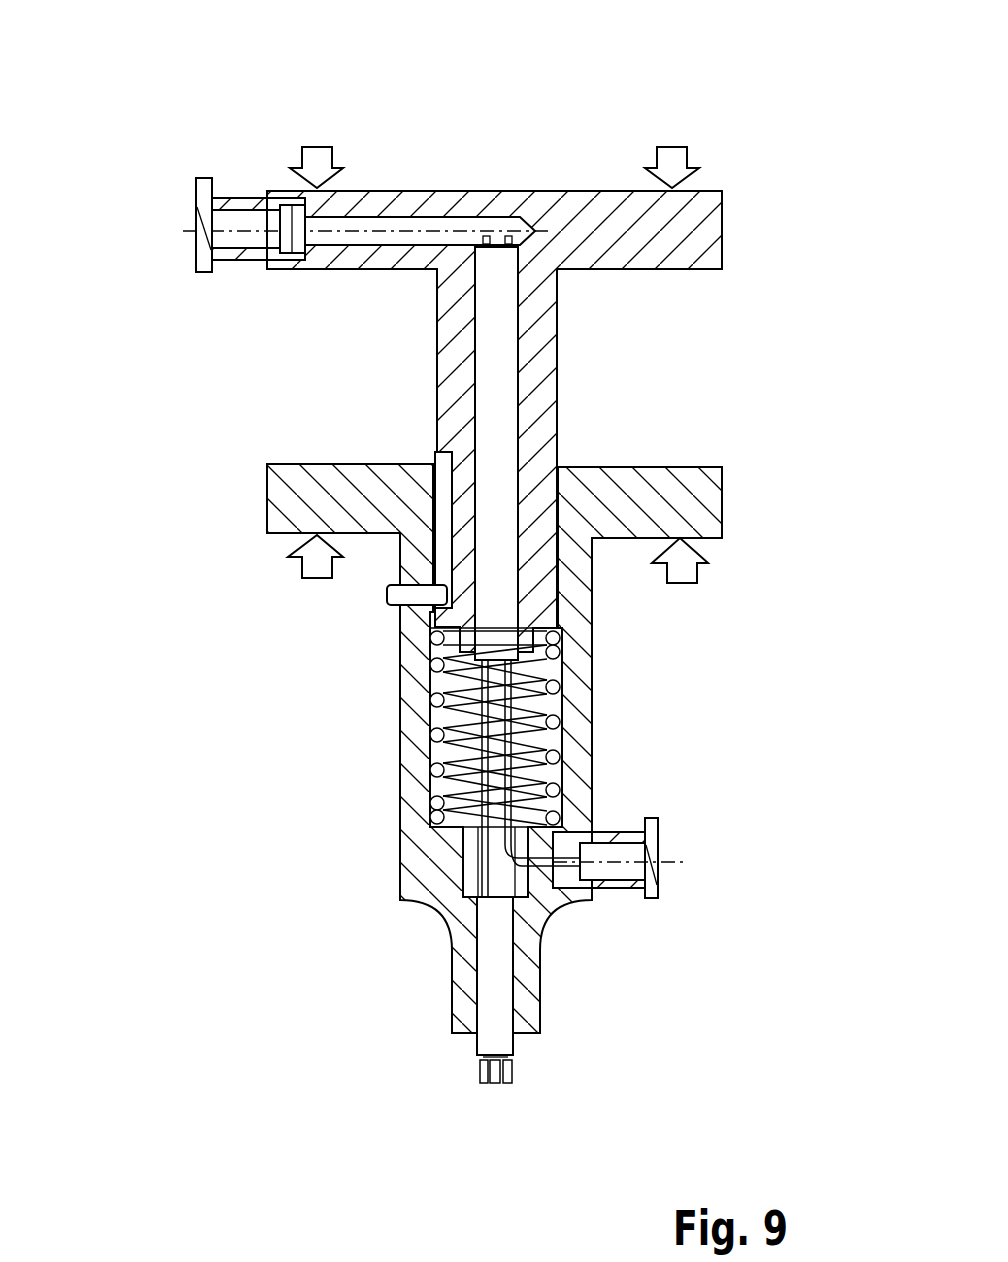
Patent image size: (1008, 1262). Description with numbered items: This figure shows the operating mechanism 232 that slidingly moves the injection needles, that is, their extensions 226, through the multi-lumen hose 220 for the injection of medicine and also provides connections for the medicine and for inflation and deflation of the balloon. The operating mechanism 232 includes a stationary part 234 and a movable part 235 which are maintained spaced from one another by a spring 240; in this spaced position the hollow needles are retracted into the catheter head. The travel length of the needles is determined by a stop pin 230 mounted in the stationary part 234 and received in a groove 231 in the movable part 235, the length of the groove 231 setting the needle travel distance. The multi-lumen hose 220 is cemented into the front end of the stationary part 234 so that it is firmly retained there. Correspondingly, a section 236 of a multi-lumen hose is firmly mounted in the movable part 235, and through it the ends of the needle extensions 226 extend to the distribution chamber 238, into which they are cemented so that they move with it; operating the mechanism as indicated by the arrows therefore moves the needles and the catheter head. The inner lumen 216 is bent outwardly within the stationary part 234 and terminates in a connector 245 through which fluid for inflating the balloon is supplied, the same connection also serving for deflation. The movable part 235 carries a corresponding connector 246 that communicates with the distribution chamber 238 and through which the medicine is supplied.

The operating mechanism 232 is at (632, 122).
The connector 246 is at (225, 197).
The distribution chamber 238 is at (390, 222).
The needle extensions 226 is at (510, 235).
The movable part 235 is at (697, 218).
The section of multi-lumen hose 236 is at (497, 322).
The groove 231 is at (443, 463).
The stationary part 234 is at (672, 515).
The stop pin 230 is at (393, 607).
The spring 240 is at (432, 708).
The connector 245 is at (560, 727).
The inner lumen 216 is at (490, 885).
The multi-lumen hose 220 is at (495, 965).